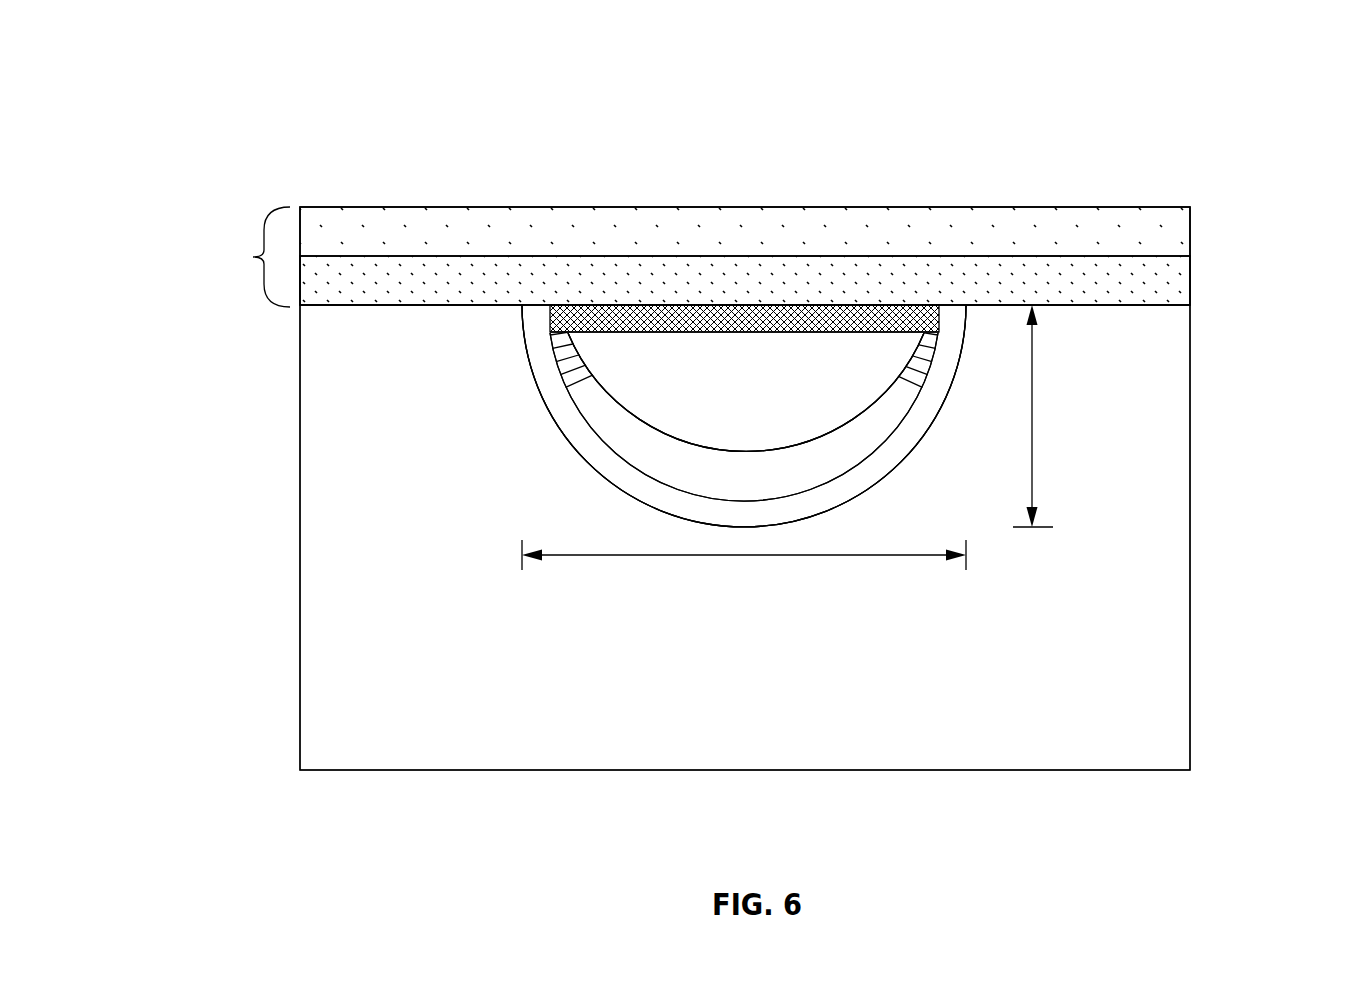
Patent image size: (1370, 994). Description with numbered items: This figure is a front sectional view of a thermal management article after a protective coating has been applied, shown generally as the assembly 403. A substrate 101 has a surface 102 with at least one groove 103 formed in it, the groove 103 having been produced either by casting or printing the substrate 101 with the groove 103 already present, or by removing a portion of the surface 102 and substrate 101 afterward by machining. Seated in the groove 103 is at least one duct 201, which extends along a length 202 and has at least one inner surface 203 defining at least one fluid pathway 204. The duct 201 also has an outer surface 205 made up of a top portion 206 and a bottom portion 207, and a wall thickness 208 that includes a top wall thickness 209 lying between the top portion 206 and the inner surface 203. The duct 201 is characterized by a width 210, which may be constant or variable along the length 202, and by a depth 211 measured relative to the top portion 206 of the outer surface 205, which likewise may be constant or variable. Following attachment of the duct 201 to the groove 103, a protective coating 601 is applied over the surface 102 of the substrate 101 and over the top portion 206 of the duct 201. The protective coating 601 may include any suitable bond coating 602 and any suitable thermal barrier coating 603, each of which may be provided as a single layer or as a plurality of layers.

The substrate 101 is at (1166, 380).
The surface 102 is at (453, 290).
The groove 103 is at (867, 493).
The duct 201 is at (842, 270).
The length 202 is at (855, 440).
The inner surface 203 is at (748, 355).
The fluid pathway 204 is at (640, 437).
The outer surface 205 is at (733, 303).
The top portion 206 is at (648, 306).
The bottom portion 207 is at (543, 397).
The wall thickness 208 is at (586, 437).
The top wall thickness 209 is at (609, 316).
The width 210 is at (743, 558).
The depth 211 is at (1032, 417).
The device assembly 403 is at (792, 138).
The protective coating 601 is at (253, 257).
The bond coating 602 is at (370, 282).
The thermal barrier coating 603 is at (373, 232).